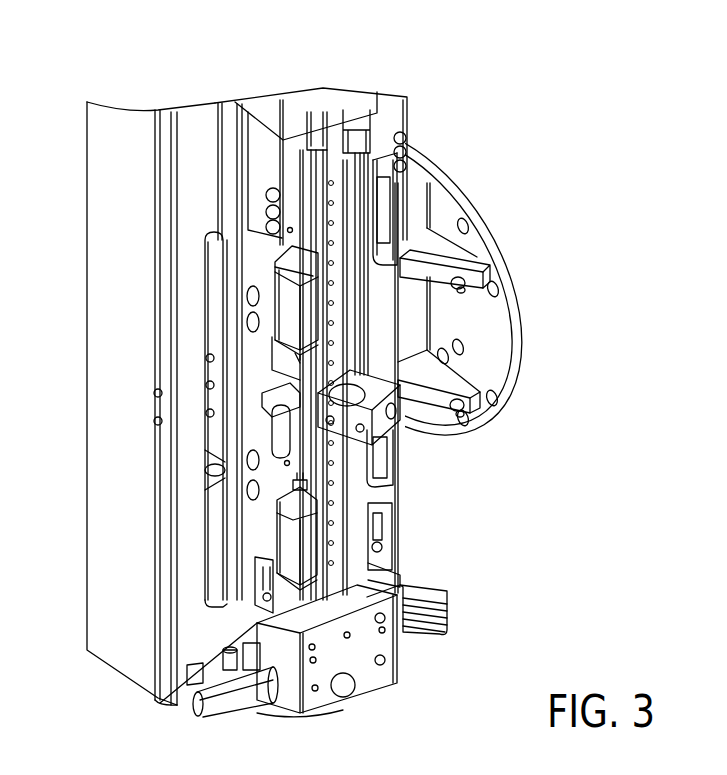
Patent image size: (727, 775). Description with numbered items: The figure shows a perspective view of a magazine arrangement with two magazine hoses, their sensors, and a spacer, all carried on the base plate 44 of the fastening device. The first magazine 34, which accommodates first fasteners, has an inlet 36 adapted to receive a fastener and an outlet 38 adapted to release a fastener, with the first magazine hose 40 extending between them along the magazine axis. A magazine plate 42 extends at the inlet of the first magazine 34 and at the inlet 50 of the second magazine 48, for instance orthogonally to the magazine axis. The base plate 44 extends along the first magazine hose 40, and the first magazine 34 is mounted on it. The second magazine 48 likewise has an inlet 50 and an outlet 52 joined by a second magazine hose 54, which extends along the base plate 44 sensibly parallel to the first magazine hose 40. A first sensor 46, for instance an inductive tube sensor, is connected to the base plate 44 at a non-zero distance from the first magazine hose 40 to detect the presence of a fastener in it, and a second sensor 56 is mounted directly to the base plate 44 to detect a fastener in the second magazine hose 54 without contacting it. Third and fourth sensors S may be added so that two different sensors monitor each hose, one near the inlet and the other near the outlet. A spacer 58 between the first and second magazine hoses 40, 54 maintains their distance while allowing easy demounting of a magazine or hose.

The first magazine 34 is at (298, 376).
The inlet 36 is at (395, 157).
The outlet 38 is at (303, 616).
The first magazine hose 40 is at (305, 182).
The magazine plate 42 is at (290, 112).
The base plate 44 is at (380, 330).
The first sensor 46 is at (297, 310).
The second magazine 48 is at (358, 287).
The inlet 50 is at (373, 110).
The outlet 52 is at (403, 587).
The second magazine hose 54 is at (360, 493).
The second sensor 56 is at (388, 203).
The spacer 58 is at (380, 430).
The third and fourth sensor S is at (300, 518).